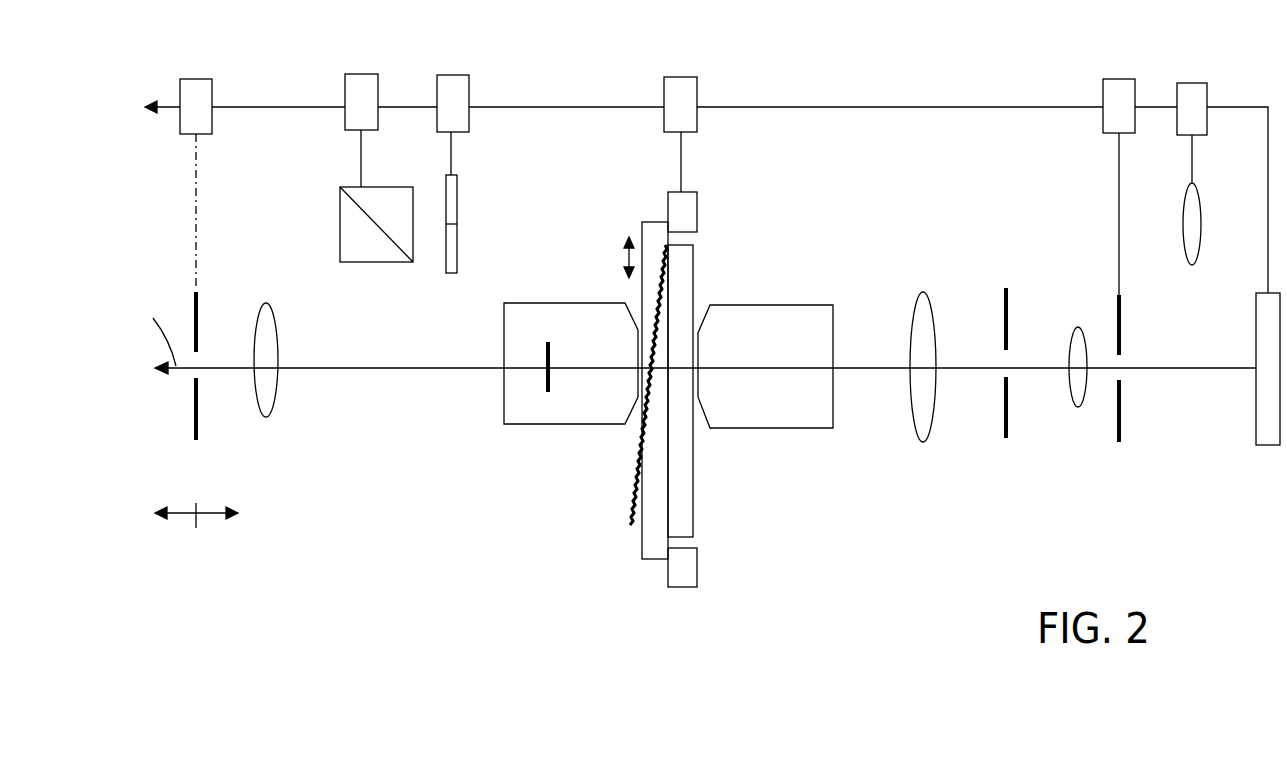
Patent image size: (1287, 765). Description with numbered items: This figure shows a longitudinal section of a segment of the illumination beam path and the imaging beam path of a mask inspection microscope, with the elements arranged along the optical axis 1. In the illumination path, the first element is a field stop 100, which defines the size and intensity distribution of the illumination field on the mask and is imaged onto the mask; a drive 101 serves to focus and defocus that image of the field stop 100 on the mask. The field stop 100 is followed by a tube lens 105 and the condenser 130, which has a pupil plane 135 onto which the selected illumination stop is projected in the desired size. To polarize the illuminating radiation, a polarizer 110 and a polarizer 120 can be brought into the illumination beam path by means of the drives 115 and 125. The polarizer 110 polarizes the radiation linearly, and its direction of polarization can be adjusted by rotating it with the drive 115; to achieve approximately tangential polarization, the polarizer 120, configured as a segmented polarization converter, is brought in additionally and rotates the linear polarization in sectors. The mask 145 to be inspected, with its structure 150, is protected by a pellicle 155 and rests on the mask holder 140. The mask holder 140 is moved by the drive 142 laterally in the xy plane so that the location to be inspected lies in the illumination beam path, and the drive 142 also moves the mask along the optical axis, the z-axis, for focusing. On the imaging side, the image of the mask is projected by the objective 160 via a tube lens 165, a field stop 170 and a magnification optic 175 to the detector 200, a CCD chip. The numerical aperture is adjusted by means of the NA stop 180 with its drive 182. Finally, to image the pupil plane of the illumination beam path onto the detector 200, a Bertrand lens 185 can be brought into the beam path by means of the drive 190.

The optical axis 1 is at (161, 329).
The field stop 100 is at (196, 432).
The drive 101 is at (197, 79).
The tube lens 105 is at (272, 405).
The polarizer 110 is at (340, 222).
The drive 115 is at (362, 74).
The polarizer 120 is at (457, 202).
The drive 125 is at (455, 75).
The condenser 130 is at (512, 398).
The pupil plane 135 is at (546, 395).
The mask holder 140 is at (700, 212).
The drive 142 is at (686, 77).
The mask 145 is at (648, 547).
The structure 150 is at (663, 467).
The pellicle 155 is at (697, 510).
The objective 160 is at (805, 420).
The tube lens 165 is at (923, 440).
The field stop 170 is at (1006, 440).
The magnification optic 175 is at (1078, 410).
The NA stop 180 is at (1119, 445).
The drive 182 is at (1118, 78).
The Bertrand lens 185 is at (1203, 210).
The drive 190 is at (1208, 92).
The detector 200 is at (1270, 450).